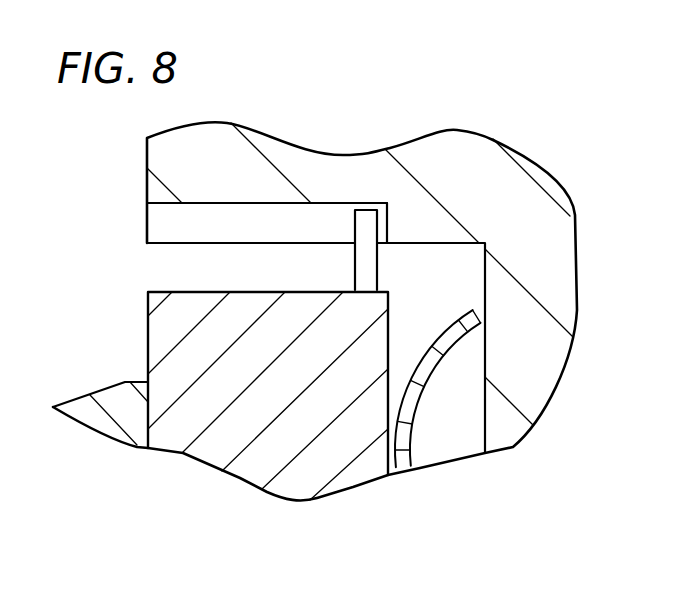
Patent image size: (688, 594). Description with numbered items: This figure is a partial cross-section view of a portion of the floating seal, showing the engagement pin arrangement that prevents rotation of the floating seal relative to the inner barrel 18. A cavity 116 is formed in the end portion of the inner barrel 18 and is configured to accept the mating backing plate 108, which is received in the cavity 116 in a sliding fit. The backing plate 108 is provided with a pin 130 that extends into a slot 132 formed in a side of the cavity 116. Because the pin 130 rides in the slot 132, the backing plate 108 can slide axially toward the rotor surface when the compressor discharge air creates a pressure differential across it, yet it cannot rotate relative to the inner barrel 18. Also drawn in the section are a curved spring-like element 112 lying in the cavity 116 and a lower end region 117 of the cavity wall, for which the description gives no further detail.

The inner barrel 18 is at (488, 157).
The backing plate 108 is at (147, 342).
The curved spring contact 112 is at (448, 345).
The cavity 116 is at (485, 288).
The lower end of wall 117 is at (485, 423).
The pin 130 is at (367, 212).
The slot 132 is at (262, 203).